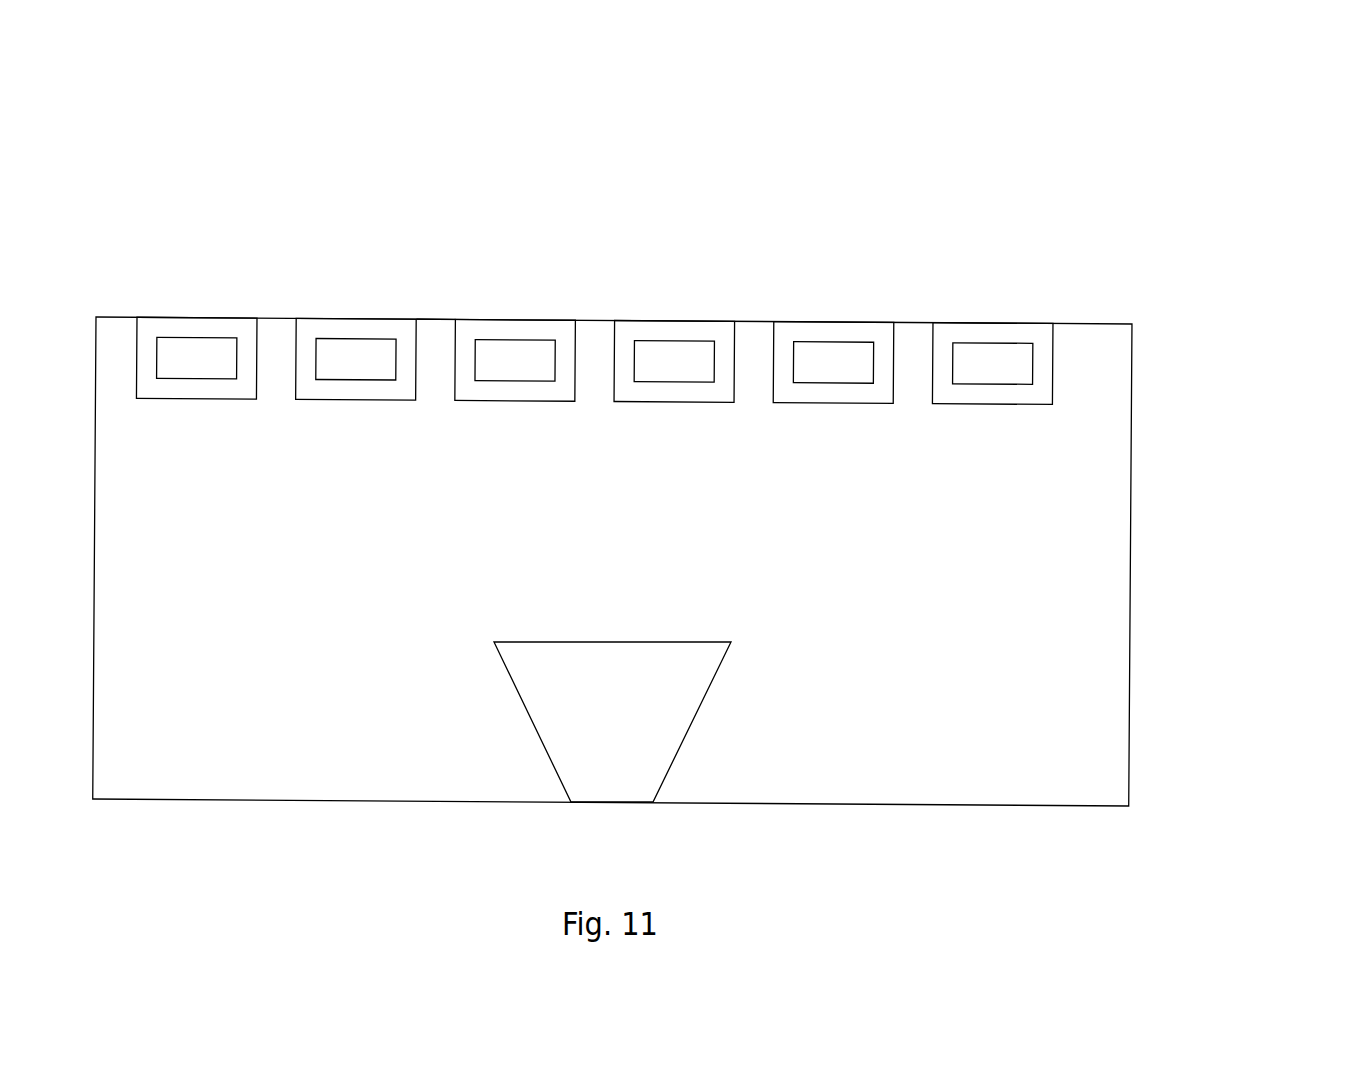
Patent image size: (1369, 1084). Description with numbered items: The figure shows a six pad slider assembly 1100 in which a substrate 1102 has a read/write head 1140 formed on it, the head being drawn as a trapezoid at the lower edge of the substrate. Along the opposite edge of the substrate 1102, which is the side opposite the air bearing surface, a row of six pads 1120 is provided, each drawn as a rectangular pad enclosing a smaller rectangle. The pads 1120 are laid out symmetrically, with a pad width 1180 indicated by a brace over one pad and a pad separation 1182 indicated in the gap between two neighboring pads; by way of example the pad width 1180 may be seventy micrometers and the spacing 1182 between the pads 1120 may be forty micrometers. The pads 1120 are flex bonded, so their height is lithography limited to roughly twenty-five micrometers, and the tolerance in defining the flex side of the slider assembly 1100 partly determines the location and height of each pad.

The six pad slider assembly 1100 is at (192, 187).
The substrate 1102 is at (1088, 508).
The pads 1120 is at (672, 360).
The read/write head 1140 is at (645, 754).
The pad width 1180 is at (893, 308).
The pad separation 1182 is at (443, 343).